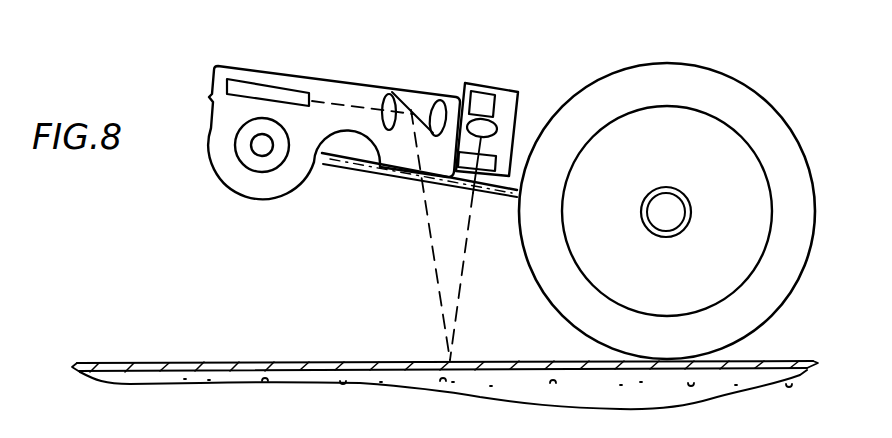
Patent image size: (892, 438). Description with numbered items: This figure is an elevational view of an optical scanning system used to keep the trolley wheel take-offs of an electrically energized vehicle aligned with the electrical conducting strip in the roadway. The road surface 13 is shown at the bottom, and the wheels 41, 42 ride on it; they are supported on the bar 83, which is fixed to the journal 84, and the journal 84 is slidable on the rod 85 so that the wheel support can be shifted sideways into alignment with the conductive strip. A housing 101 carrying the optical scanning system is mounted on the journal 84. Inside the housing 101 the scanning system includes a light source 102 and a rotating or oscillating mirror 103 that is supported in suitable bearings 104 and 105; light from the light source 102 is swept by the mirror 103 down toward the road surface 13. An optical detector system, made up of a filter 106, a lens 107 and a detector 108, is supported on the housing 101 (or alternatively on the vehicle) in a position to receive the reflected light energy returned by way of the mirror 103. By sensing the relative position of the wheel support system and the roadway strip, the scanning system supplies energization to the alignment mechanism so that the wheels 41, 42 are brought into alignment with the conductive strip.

The housing 101 is at (268, 55).
The light source 102 is at (293, 92).
The mirror 103 is at (405, 102).
The bearing 104 is at (388, 93).
The bearing 105 is at (455, 86).
The filter 106 is at (487, 171).
The lens 107 is at (493, 122).
The detector 108 is at (488, 98).
The bar 83 is at (334, 157).
The journal 84 is at (247, 160).
The rod 85 is at (258, 143).
The wheel 41 is at (667, 197).
The wheel 42 is at (800, 57).
The road surface 13 is at (357, 378).